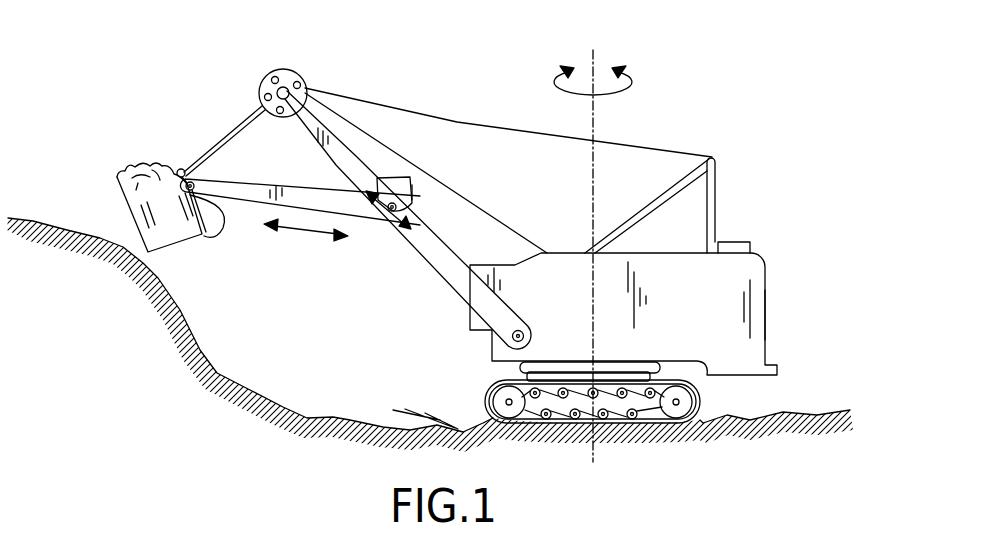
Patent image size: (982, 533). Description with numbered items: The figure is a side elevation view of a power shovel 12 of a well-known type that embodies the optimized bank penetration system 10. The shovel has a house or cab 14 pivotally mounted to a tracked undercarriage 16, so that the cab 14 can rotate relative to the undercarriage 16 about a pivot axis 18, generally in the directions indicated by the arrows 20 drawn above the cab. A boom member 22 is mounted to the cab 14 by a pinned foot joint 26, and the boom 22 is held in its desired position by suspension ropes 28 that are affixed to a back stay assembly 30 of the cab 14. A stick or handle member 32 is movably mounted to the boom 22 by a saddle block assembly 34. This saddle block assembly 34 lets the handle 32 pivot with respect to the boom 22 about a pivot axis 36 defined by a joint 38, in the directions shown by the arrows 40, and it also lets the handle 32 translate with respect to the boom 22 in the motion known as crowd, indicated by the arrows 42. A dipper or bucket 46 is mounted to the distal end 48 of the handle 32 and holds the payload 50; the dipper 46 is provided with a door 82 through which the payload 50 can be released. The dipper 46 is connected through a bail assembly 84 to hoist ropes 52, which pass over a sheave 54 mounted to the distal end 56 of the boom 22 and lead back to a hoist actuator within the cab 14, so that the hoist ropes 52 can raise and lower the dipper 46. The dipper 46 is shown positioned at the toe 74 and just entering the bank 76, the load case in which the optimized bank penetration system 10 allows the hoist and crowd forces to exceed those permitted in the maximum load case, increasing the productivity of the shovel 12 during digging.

The optimized bank penetration system 10 is at (137, 58).
The power shovel 12 is at (782, 286).
The house or cab 14 is at (767, 329).
The tracked undercarriage 16 is at (698, 405).
The pivot axis 18 is at (596, 108).
The arrows 20 is at (566, 95).
The boom member 22 is at (458, 300).
The pinned foot joint 26 is at (522, 330).
The suspension ropes 28 is at (457, 123).
The back stay assembly 30 is at (716, 182).
The stick or handle member 32 is at (303, 190).
The saddle block assembly 34 is at (417, 181).
The pivot axis 36 is at (400, 208).
The joint 38 is at (411, 196).
The arrows 40 is at (388, 234).
The arrows (crowd direction) 42 is at (300, 232).
The dipper or bucket 46 is at (122, 196).
The distal end of handle 48 is at (200, 182).
The payload 50 is at (136, 168).
The hoist ropes 52 is at (225, 133).
The sheave 54 is at (259, 103).
The distal end of boom 56 is at (300, 120).
The toe 74 is at (422, 415).
The bank 76 is at (218, 365).
The door 82 is at (213, 245).
The bail assembly 84 is at (179, 169).